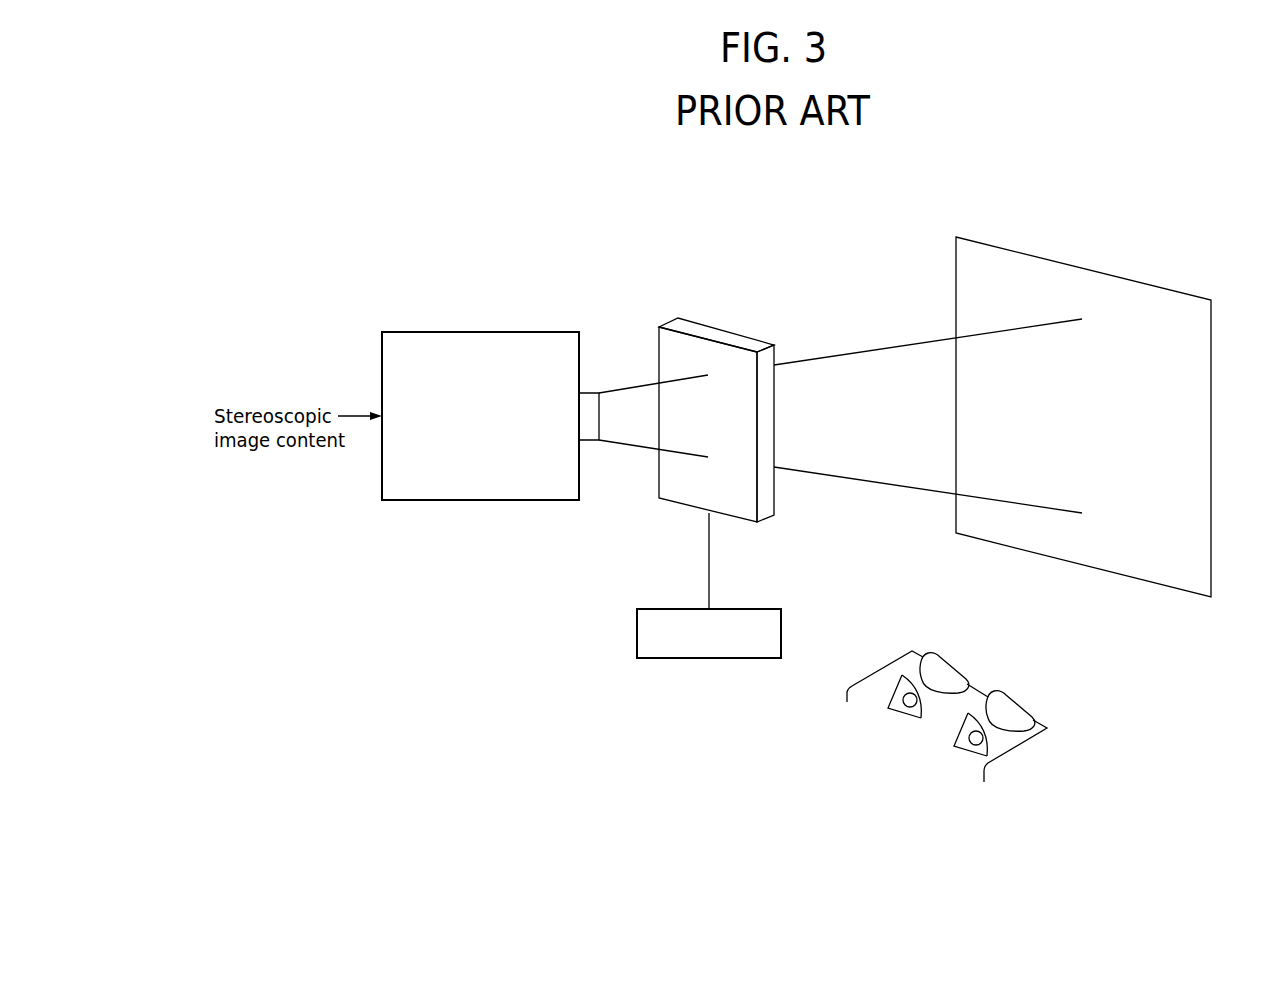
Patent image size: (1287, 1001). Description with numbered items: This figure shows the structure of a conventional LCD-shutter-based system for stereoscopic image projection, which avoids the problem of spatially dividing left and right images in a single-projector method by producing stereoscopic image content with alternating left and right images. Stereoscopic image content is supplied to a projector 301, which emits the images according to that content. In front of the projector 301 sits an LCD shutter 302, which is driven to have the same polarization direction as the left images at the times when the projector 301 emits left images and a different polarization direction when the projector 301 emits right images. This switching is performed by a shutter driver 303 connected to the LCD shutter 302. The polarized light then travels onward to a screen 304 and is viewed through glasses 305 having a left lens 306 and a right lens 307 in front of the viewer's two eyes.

The projector 301 is at (478, 345).
The LCD shutter 302 is at (708, 330).
The shutter driver 303 is at (714, 660).
The screen 304 is at (1053, 270).
The shutter glasses 305 is at (1013, 750).
The left lens 306 is at (952, 660).
The right lens 307 is at (1012, 698).